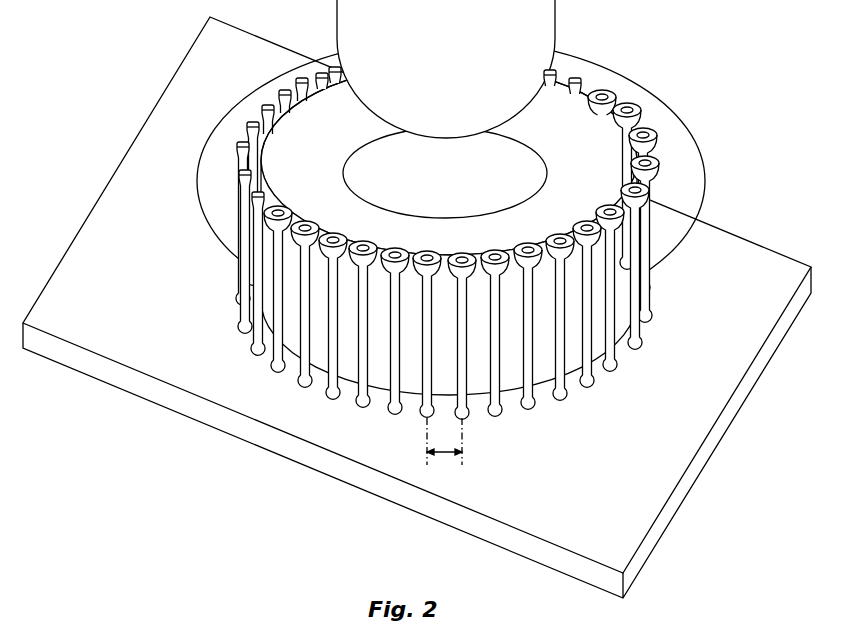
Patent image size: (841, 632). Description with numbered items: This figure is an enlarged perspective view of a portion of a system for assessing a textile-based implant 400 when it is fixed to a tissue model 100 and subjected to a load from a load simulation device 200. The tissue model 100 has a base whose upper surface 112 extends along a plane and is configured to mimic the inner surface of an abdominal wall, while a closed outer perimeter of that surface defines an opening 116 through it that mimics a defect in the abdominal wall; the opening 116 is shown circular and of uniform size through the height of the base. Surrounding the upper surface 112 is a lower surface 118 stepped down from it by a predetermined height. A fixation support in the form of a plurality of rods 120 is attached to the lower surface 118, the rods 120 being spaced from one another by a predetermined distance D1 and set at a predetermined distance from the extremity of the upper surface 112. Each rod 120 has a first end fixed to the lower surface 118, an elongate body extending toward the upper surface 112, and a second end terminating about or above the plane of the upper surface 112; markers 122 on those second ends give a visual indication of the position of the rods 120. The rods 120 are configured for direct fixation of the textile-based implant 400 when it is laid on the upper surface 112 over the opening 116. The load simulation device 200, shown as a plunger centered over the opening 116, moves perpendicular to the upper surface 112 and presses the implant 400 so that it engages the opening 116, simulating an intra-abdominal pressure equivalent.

The tissue model 100 is at (417, 299).
The upper surface 112 is at (585, 194).
The opening 116 is at (480, 186).
The lower surface 118 is at (614, 449).
The rods 120 is at (576, 74).
The markers 122 is at (647, 92).
The load simulation device 200 is at (455, 88).
The textile-based implant 400 is at (698, 190).
The predetermined distance between rods D1 is at (444, 451).